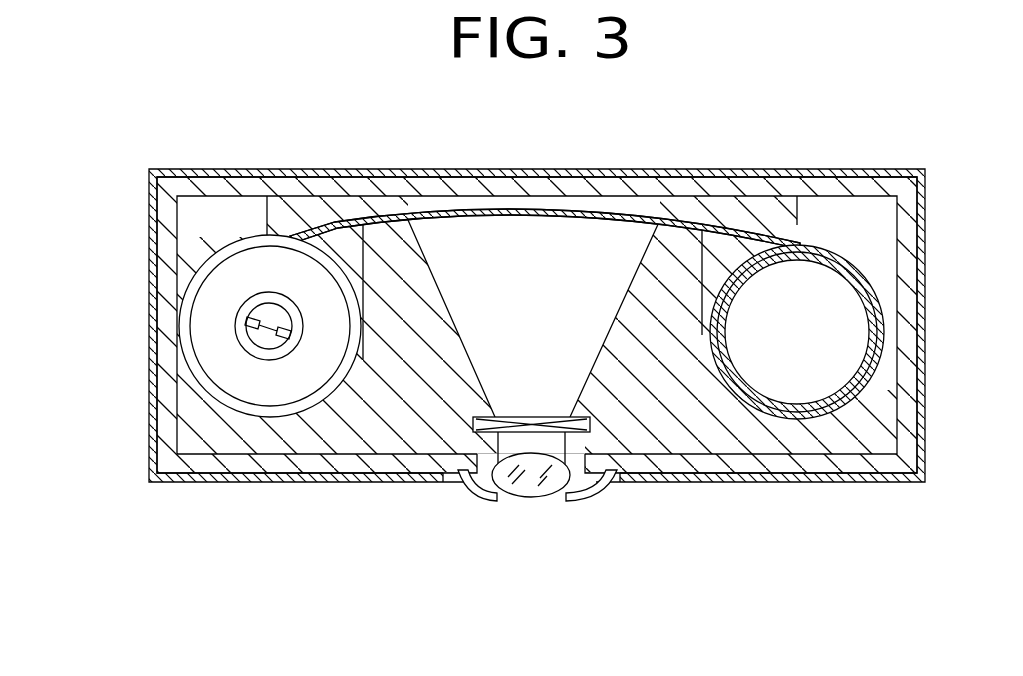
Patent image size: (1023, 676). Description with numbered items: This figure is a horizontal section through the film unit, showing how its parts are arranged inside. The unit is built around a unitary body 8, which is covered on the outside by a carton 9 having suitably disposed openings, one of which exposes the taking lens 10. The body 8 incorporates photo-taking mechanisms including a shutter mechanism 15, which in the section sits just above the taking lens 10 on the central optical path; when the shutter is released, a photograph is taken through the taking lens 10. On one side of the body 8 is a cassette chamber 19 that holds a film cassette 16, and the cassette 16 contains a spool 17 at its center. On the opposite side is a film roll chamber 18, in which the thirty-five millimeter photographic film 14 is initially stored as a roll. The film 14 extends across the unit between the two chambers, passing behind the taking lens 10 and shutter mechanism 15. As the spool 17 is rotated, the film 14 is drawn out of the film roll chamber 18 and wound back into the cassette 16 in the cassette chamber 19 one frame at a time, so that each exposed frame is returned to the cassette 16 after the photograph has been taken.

The unitary body 8 is at (208, 463).
The carton 9 is at (280, 477).
The taking lens 10 is at (522, 492).
The photographic film 14 is at (877, 313).
The shutter mechanism 15 is at (529, 416).
The film cassette 16 is at (190, 309).
The spool 17 is at (235, 338).
The film roll chamber 18 is at (875, 238).
The cassette chamber 19 is at (190, 241).